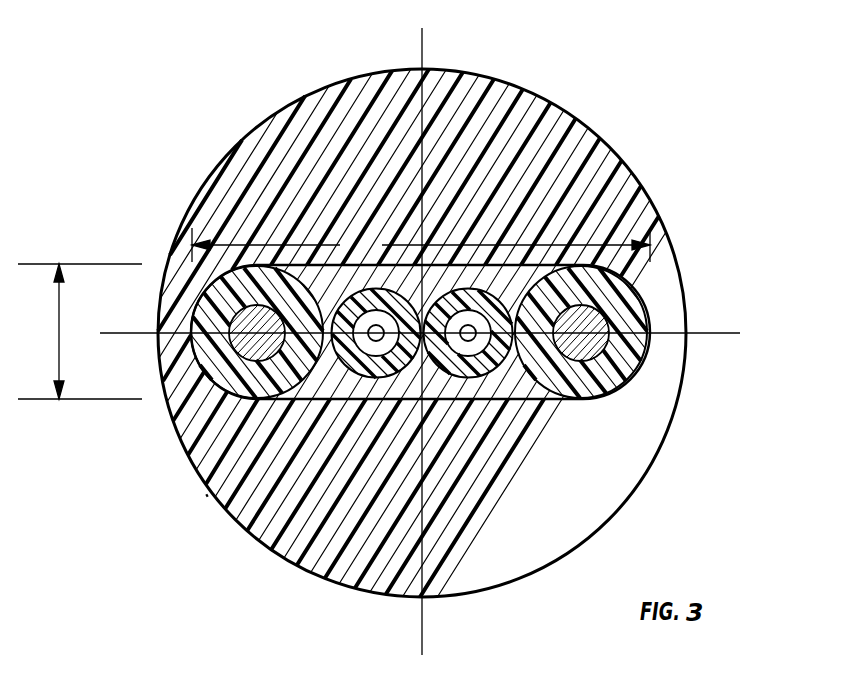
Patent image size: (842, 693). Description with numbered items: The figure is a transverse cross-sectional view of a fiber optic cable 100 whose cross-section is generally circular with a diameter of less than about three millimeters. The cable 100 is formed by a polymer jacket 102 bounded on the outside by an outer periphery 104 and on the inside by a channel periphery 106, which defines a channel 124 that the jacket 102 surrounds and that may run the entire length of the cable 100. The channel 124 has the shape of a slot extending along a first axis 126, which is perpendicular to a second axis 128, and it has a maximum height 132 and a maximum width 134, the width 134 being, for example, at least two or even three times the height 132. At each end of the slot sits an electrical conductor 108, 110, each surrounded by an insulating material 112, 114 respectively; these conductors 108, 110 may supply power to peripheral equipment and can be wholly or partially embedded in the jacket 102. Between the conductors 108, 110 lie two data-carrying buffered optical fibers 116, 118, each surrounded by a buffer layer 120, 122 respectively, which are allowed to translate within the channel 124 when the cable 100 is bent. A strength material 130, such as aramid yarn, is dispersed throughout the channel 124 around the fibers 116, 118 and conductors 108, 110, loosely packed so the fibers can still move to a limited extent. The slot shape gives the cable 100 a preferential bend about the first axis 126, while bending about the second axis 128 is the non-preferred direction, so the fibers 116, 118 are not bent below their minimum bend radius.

The fiber optic cable 100 is at (624, 145).
The polymer jacket 102 is at (322, 172).
The outer periphery 104 is at (208, 495).
The channel periphery 106 is at (317, 247).
The electrical conductor 108 is at (250, 345).
The electrical conductor 110 is at (583, 320).
The insulating material 112 is at (230, 390).
The insulating material 114 is at (622, 363).
The buffered optical fiber 116 is at (378, 341).
The buffered optical fiber 118 is at (468, 341).
The buffer layer 120 is at (355, 365).
The buffer layer 122 is at (496, 368).
The channel 124 is at (548, 400).
The first axis 126 is at (705, 332).
The second axis 128 is at (427, 50).
The strength material 130 is at (410, 275).
The maximum height 132 is at (593, 86).
The maximum width 134 is at (421, 245).